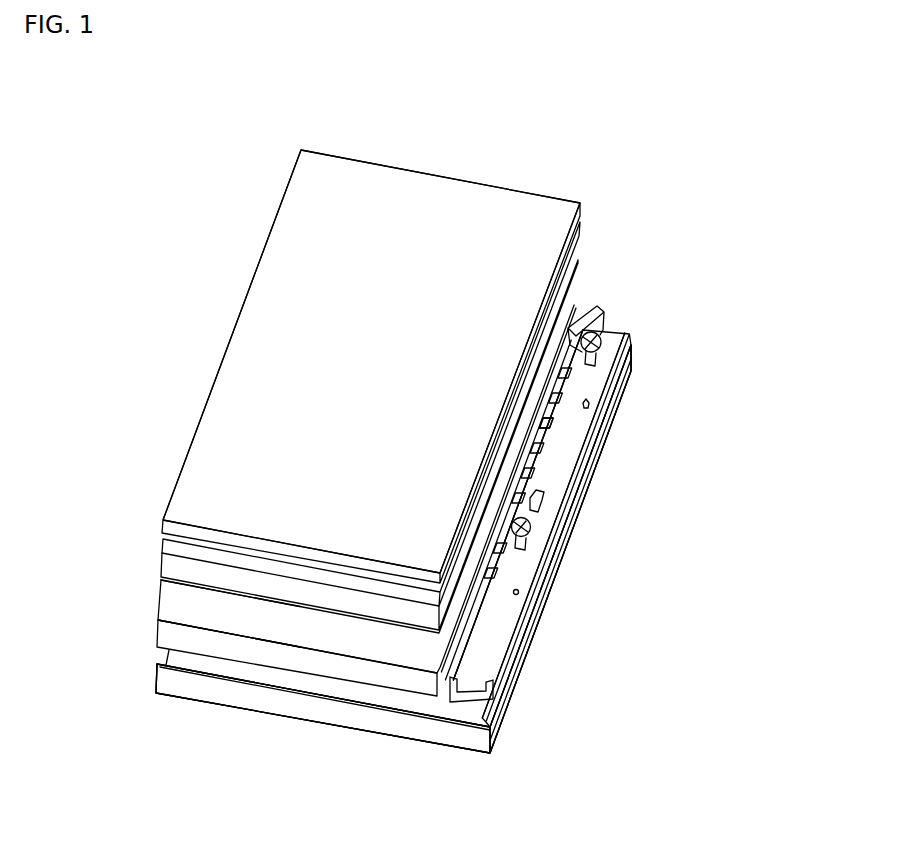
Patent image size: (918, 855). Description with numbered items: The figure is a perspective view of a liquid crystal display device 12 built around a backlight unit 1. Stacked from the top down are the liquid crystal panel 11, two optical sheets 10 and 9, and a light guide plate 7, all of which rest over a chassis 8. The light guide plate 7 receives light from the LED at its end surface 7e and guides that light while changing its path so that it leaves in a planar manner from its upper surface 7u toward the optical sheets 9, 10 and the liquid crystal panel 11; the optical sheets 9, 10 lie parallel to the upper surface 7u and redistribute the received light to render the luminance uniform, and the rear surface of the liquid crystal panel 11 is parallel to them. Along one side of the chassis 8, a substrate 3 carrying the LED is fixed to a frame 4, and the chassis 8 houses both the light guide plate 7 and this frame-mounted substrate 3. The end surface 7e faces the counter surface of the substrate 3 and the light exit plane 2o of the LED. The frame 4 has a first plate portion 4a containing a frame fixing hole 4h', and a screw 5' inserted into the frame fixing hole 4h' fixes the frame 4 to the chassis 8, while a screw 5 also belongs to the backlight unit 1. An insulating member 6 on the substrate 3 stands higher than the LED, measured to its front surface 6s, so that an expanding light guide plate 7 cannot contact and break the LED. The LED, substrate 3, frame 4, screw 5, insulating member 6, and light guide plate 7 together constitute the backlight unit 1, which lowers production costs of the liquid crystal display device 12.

The liquid crystal display device 12 is at (644, 178).
The backlight unit 1 is at (635, 327).
The liquid crystal panel 11 is at (148, 526).
The optical sheet 10 is at (149, 555).
The optical sheet 9 is at (149, 582).
The light guide plate 7 is at (143, 638).
The upper surface of light guide plate 7u is at (333, 638).
The end surface of light guide plate 7e is at (453, 637).
The chassis 8 is at (247, 712).
The frame 4 is at (479, 722).
The first plate portion 4a is at (498, 632).
The frame fixing hole 4h' is at (566, 605).
The substrate 3 is at (453, 700).
The light exit plane 2o is at (543, 410).
The screw 5 is at (576, 511).
The screw 5' is at (570, 540).
The insulating member 6 is at (578, 296).
The front surface of insulating member 6s is at (568, 322).